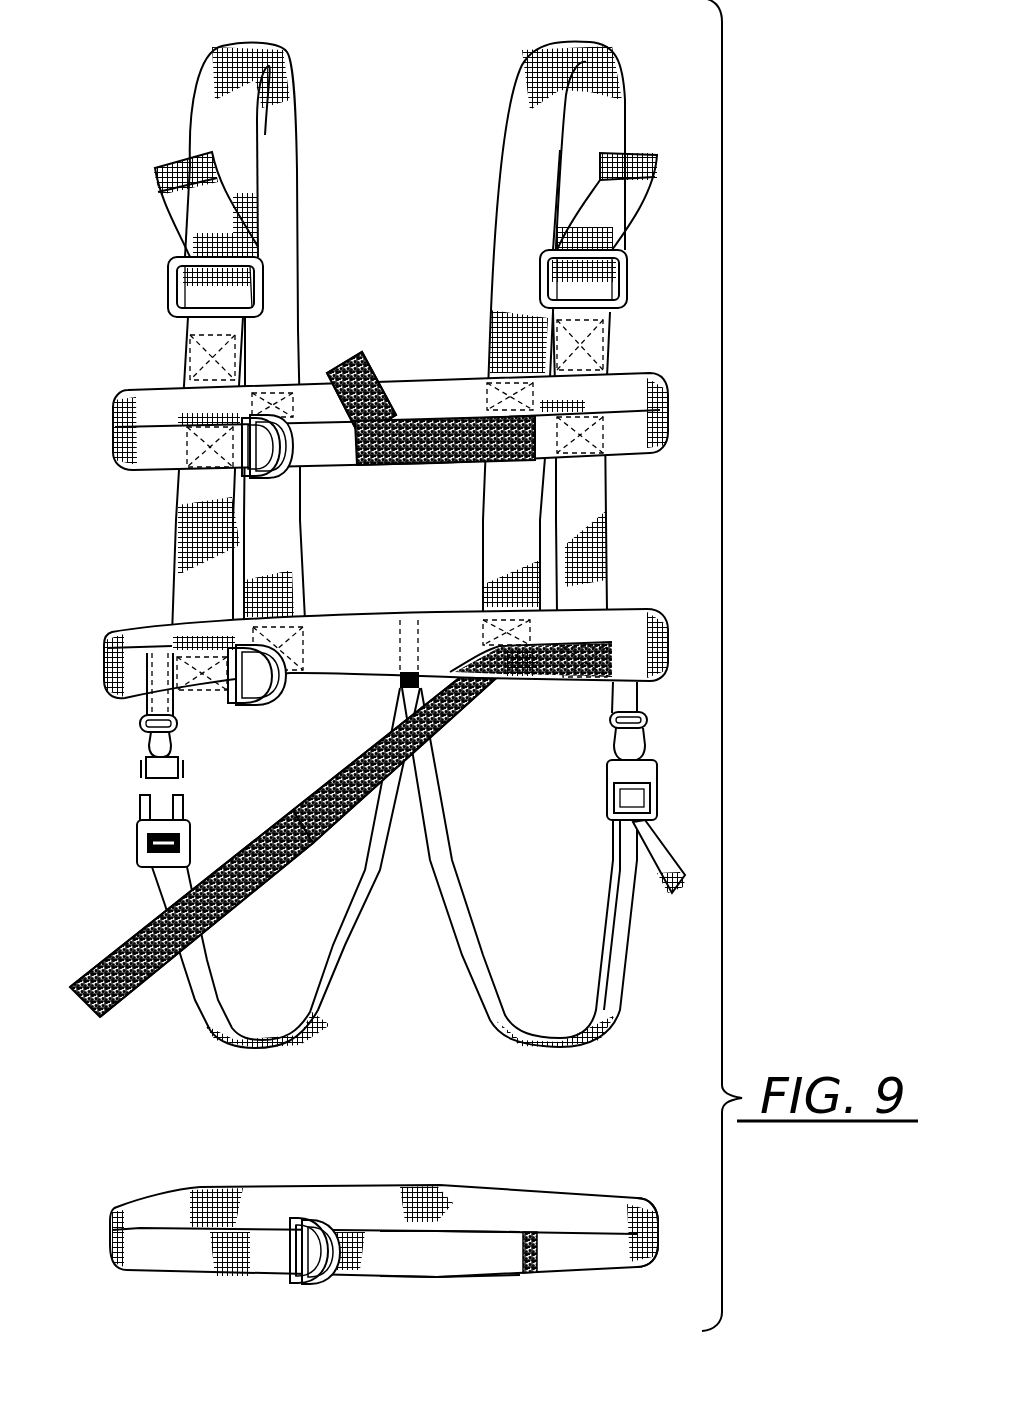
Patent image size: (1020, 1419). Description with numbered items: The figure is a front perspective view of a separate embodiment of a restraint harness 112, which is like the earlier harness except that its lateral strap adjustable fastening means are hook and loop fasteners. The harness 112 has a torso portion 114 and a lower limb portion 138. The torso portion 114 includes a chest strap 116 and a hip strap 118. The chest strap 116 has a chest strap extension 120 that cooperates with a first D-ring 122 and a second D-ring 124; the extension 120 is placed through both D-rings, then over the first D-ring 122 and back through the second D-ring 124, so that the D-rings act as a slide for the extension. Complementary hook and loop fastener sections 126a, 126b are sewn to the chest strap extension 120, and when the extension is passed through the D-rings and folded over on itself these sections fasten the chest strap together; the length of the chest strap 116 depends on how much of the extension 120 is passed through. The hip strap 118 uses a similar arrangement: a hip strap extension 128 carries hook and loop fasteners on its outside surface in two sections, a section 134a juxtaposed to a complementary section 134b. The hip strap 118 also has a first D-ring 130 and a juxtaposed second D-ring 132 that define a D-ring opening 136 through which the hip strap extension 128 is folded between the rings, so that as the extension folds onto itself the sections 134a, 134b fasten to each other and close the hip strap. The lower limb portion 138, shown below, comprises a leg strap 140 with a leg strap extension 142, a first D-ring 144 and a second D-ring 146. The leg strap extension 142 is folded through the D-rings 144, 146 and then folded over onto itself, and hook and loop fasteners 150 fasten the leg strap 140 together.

The restraint harness 112 is at (634, 85).
The torso portion 114 is at (627, 362).
The chest strap 116 is at (673, 442).
The hip strap 118 is at (673, 660).
The chest strap extension 120 is at (378, 362).
The first D-ring 122 is at (257, 477).
The second D-ring 124 is at (284, 476).
The hook and loop fastener section 126a is at (362, 364).
The hook and loop fastener section 126b is at (415, 467).
The hip strap extension 128 is at (70, 985).
The first D-ring 130 is at (250, 708).
The second D-ring 132 is at (265, 712).
The hook and loop fastener section 134a is at (526, 714).
The complementary hook and loop fastener section 134b is at (523, 698).
The D-ring opening 136 is at (287, 700).
The lower limb portion 138 is at (600, 1180).
The leg strap 140 is at (665, 1242).
The leg strap extension 142 is at (465, 1268).
The first D-ring 144 is at (300, 1286).
The second D-ring 146 is at (328, 1287).
The hook and loop fasteners 150 is at (537, 1265).